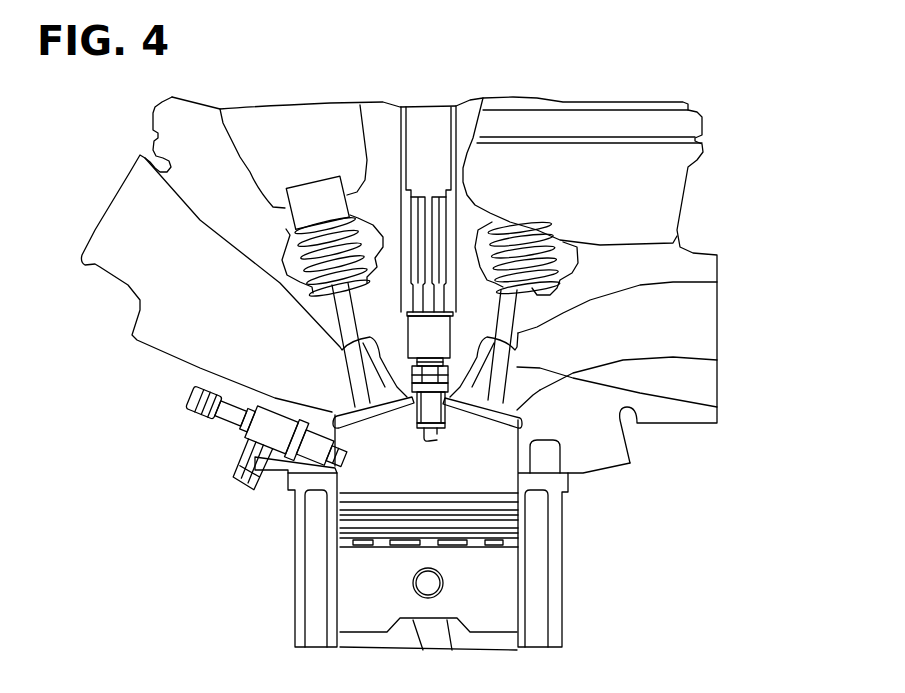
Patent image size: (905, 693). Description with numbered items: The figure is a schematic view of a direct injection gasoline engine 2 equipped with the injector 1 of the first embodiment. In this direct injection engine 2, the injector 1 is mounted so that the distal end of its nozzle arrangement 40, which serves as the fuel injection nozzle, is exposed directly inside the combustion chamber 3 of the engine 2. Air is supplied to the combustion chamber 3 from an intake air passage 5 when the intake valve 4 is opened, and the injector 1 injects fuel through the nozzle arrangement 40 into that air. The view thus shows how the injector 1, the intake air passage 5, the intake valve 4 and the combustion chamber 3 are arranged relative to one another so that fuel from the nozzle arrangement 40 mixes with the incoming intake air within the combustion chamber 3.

The injector 1 is at (203, 407).
The direct injection engine 2 is at (388, 50).
The combustion chamber 3 is at (482, 480).
The intake valve 4 is at (717, 407).
The intake air passage 5 is at (683, 303).
The nozzle arrangement 40 is at (337, 463).